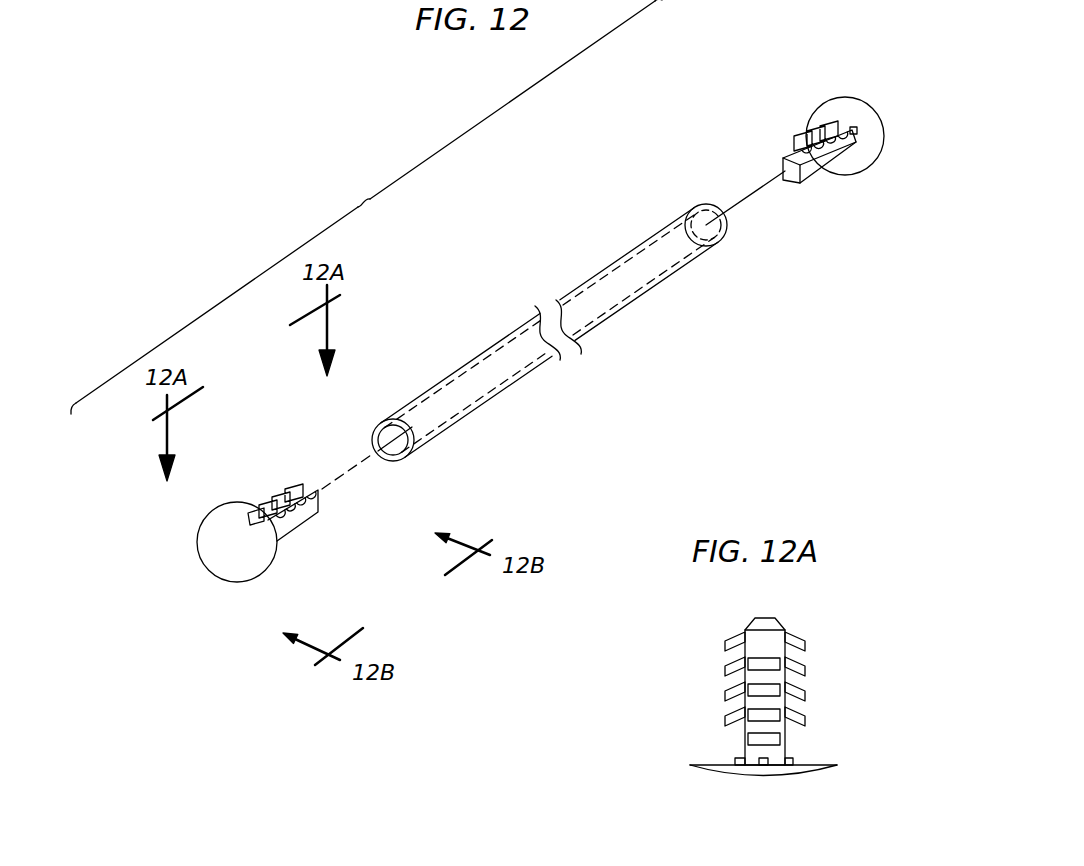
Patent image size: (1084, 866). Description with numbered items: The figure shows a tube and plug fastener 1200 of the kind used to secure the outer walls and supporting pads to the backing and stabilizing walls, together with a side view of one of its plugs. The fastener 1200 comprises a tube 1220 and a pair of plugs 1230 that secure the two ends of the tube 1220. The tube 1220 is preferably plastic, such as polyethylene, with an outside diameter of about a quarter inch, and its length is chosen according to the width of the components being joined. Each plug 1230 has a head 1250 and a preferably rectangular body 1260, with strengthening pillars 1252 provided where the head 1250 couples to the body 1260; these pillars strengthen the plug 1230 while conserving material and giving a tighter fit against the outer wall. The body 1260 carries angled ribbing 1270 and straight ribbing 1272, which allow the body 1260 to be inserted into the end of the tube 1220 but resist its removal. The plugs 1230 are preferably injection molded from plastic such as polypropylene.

In FIG. 12, the tube and plug fastener 1200 is at (366, 207).
In FIG. 12, the tube 1220 is at (533, 363).
In FIG. 12, the plug 1230 is at (860, 182).
In FIG. 12A, the plug 1230 is at (740, 711).
In FIG. 12, the head 1250 is at (252, 560).
In FIG. 12A, the head 1250 is at (790, 772).
In FIG. 12A, the strengthening pillars 1252 is at (761, 758).
In FIG. 12, the body 1260 is at (296, 500).
In FIG. 12A, the body 1260 is at (740, 682).
In FIG. 12, the angled ribbing 1270 is at (309, 505).
In FIG. 12A, the angled ribbing 1270 is at (801, 647).
In FIG. 12, the straight ribbing 1272 is at (299, 509).
In FIG. 12A, the straight ribbing 1272 is at (770, 662).